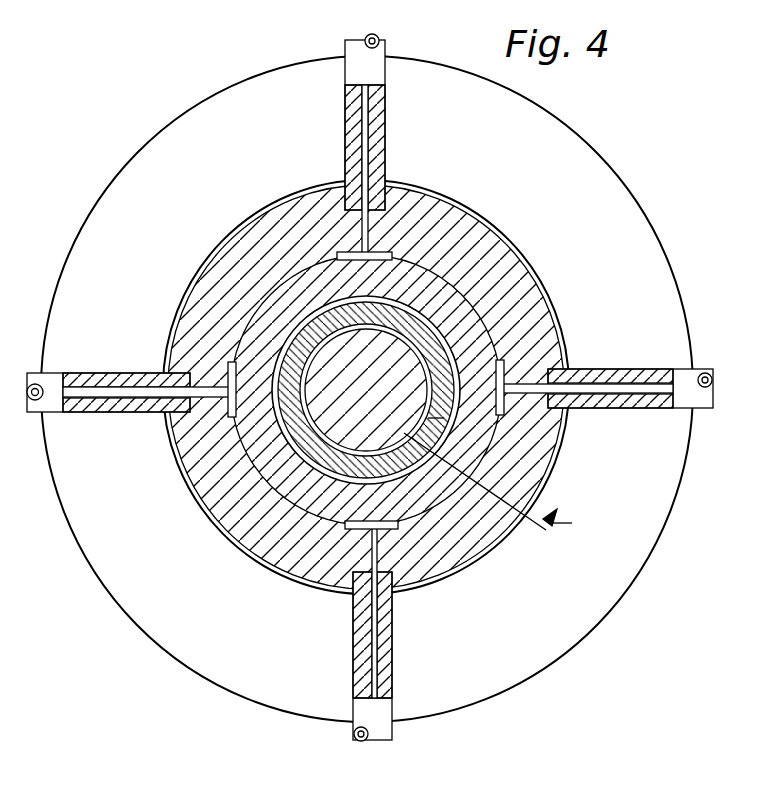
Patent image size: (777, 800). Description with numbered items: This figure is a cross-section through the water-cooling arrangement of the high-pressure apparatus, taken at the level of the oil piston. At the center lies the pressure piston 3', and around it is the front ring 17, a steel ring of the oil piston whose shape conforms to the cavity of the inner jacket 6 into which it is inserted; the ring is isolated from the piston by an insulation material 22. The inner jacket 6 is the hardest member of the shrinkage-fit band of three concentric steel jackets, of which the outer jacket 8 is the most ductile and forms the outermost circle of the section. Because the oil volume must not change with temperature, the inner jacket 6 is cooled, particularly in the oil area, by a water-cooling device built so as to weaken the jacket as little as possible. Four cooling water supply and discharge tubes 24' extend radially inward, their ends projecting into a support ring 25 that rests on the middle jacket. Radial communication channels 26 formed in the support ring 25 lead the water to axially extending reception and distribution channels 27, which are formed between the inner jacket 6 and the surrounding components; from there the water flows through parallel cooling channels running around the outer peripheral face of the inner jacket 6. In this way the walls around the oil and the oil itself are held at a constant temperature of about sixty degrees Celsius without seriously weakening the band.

The outer jacket 8 is at (232, 662).
The support ring 25 is at (218, 490).
The inner jacket 6 is at (412, 413).
The front ring 17 is at (343, 322).
The insulation material 22 is at (424, 377).
The shaft 3' is at (366, 390).
The cooling water supply and discharge tubes 24' is at (370, 387).
The radial communication channels 26 is at (190, 372).
The reception and distribution channels 27 is at (352, 252).